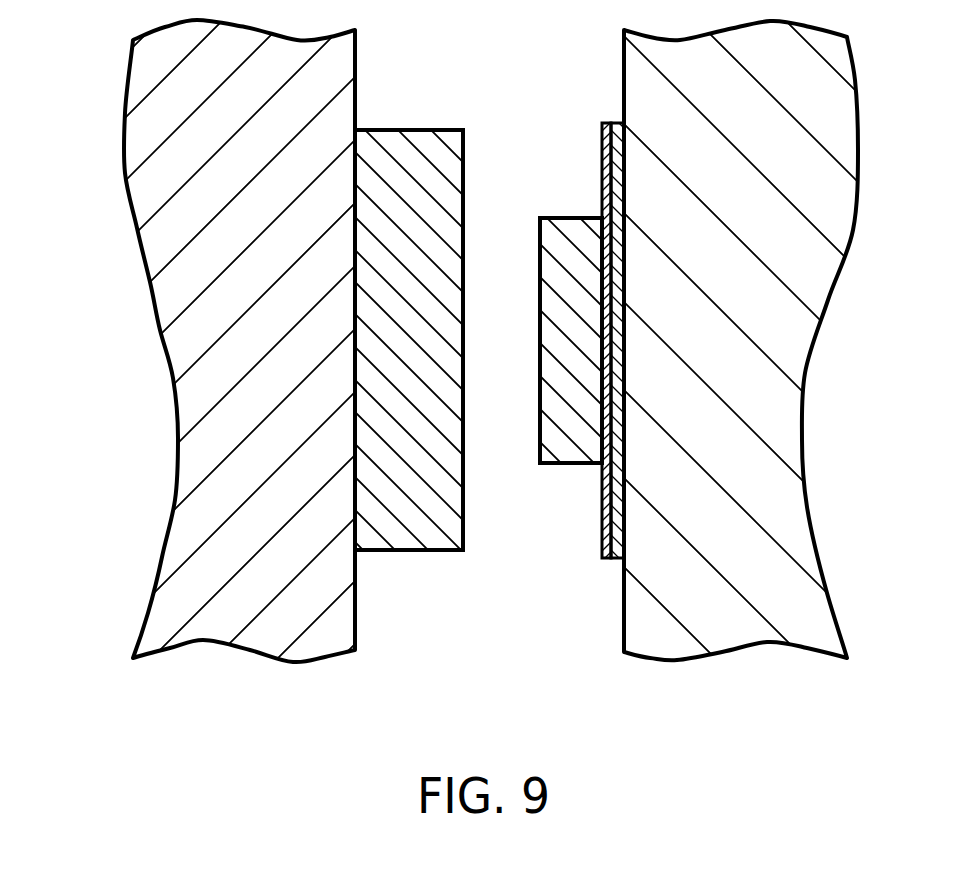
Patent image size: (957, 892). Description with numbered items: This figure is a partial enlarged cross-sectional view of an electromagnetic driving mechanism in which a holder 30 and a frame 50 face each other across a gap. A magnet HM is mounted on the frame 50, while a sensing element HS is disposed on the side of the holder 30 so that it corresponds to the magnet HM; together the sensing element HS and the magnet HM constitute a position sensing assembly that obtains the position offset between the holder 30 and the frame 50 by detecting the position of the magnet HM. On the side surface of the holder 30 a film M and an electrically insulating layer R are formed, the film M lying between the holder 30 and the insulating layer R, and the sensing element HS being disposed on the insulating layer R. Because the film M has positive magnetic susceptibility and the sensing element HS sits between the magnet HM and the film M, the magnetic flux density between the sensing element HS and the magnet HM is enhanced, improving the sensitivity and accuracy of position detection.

The frame 50 is at (215, 345).
The holder 30 is at (763, 342).
The magnet HM is at (411, 163).
The sensing element HS is at (563, 250).
The electrically insulating layer R is at (605, 528).
The film M is at (605, 556).